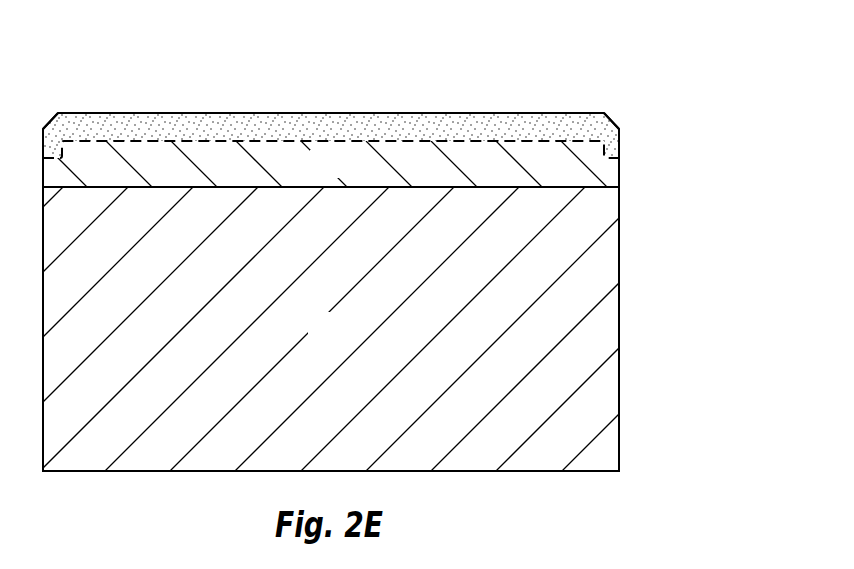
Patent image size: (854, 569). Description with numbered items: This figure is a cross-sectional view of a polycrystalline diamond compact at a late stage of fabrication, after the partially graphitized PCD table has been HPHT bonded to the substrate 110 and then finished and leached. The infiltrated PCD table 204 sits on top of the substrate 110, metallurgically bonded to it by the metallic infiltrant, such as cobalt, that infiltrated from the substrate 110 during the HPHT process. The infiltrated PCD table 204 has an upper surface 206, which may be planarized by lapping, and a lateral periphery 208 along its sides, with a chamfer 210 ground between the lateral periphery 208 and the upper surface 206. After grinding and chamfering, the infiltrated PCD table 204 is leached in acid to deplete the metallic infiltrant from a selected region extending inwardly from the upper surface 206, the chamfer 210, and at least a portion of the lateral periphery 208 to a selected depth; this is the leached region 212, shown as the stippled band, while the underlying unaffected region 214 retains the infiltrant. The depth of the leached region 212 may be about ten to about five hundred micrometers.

The substrate 110 is at (350, 338).
The infiltrated PCD table 204 is at (674, 158).
The upper surface 206 is at (473, 113).
The lateral periphery 208 is at (620, 177).
The chamfer 210 is at (613, 121).
The leached region 212 is at (153, 125).
The region 214 is at (350, 176).